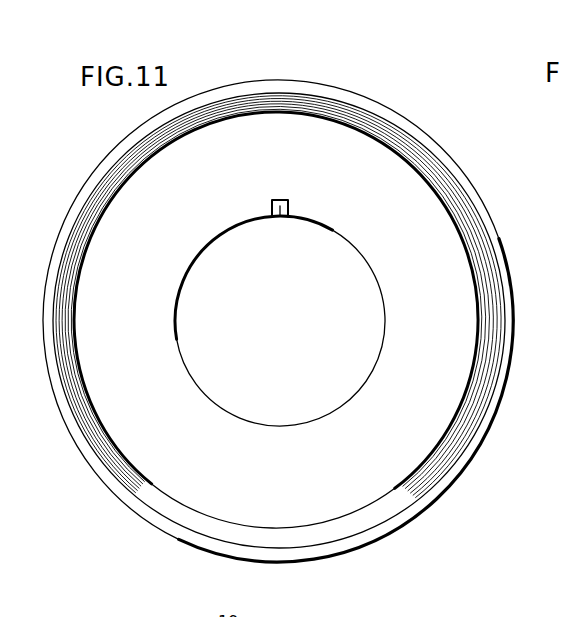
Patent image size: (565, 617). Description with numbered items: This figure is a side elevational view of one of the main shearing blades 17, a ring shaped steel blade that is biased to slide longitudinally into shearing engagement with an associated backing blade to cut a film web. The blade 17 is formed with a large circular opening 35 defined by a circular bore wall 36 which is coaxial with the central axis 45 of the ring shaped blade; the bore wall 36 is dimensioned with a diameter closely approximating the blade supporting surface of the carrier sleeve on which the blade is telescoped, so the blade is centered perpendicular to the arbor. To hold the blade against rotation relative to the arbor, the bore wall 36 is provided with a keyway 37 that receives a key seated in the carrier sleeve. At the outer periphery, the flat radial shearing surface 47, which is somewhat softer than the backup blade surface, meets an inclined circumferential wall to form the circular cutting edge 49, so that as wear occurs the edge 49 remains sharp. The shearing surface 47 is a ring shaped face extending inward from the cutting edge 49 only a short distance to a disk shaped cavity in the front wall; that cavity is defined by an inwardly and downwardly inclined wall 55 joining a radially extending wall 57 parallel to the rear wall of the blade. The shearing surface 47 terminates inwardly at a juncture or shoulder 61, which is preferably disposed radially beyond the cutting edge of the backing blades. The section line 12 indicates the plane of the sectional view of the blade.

The section line 12- 12 is at (278, 53).
The main shearing blade 17 is at (479, 180).
The circular opening 35 is at (296, 374).
The circular wall 36 is at (374, 311).
The keyway 37 is at (284, 200).
The central axis 45 is at (283, 318).
The shearing surface 47 is at (78, 202).
The cutting edge 49 is at (505, 247).
The inclined wall 55 is at (135, 153).
The radially extending wall 57 is at (293, 467).
The juncture 61 is at (473, 206).